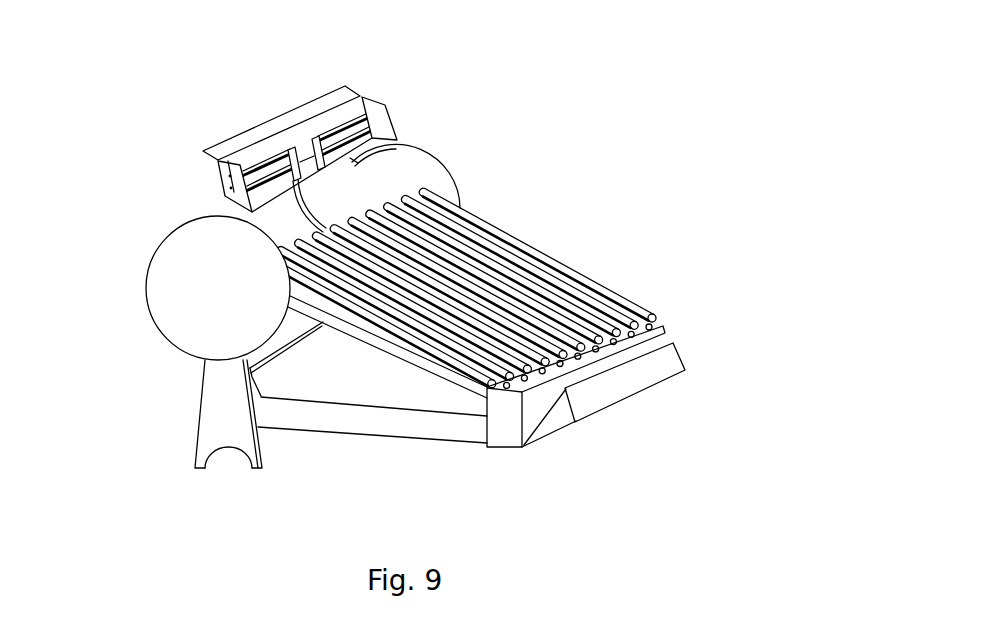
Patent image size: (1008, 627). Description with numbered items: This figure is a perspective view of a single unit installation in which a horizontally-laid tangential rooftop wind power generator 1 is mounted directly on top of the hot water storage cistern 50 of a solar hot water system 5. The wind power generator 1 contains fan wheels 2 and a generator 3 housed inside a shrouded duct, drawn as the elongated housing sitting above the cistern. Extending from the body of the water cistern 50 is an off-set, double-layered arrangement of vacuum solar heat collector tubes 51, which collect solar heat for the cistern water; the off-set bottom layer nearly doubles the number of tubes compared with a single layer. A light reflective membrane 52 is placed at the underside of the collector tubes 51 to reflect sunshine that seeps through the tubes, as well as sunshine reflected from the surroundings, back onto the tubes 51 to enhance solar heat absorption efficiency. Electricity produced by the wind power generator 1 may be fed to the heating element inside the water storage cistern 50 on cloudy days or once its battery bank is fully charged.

The horizontally-laid tangential rooftop wind power generator 1 is at (217, 177).
The fan wheels 2 is at (263, 167).
The generator 3 is at (307, 140).
The solar hot water system 5 is at (502, 177).
The hot water storage cistern 50 is at (195, 287).
The vacuum solar heat collector tubes 51 is at (540, 290).
The reflective membrane 52 is at (362, 378).